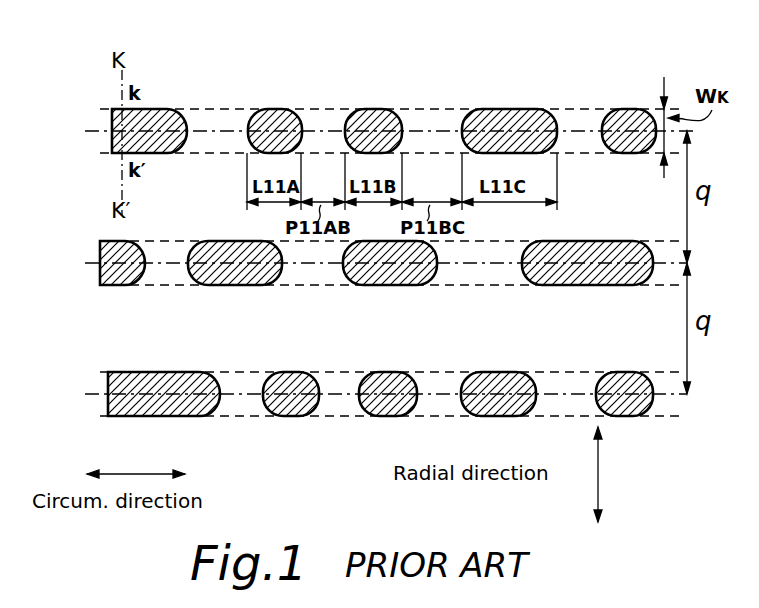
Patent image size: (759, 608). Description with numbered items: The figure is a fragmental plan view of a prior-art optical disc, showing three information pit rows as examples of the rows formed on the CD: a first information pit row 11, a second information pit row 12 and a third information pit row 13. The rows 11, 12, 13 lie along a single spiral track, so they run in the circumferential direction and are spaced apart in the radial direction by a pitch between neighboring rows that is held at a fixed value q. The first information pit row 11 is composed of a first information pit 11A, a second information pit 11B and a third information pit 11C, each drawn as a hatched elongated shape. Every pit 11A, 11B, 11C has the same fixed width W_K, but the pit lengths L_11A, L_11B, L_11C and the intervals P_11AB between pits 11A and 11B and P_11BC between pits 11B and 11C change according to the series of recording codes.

The first information pit row 11 is at (371, 92).
The second information pit row 12 is at (366, 263).
The third information pit row 13 is at (366, 394).
The first information pit 11A is at (272, 108).
The second information pit 11B is at (378, 110).
The third information pit 11C is at (507, 122).